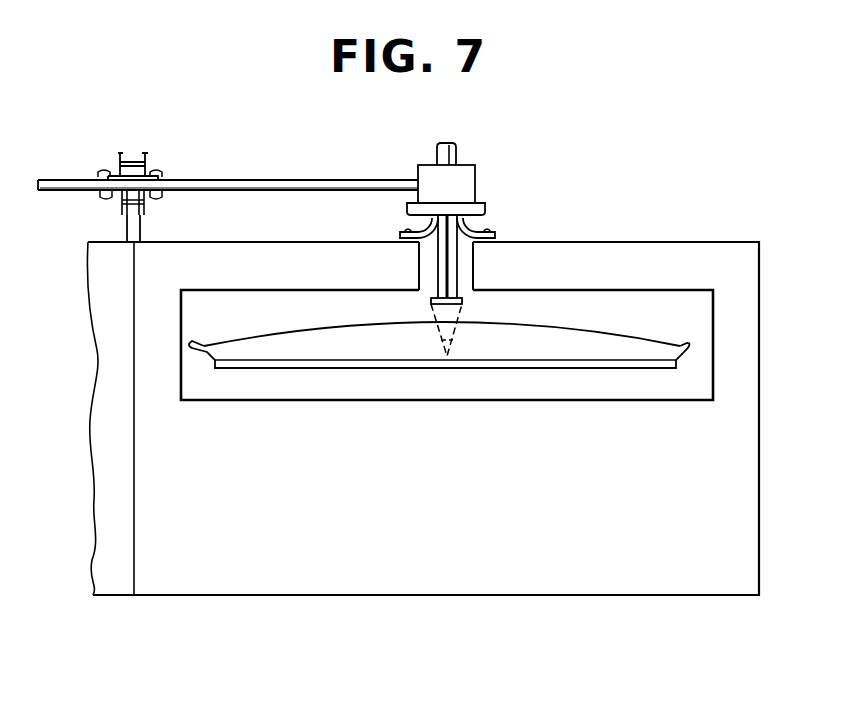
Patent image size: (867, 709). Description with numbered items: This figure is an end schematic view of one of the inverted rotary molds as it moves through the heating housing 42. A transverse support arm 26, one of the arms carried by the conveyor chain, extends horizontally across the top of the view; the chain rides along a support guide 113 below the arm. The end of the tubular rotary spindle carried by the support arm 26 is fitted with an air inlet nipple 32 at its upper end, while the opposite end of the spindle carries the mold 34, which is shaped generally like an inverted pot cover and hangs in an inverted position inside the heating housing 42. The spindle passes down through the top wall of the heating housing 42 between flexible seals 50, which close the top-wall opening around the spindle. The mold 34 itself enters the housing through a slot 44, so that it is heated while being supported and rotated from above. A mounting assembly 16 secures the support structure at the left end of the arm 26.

The clamp bracket 16 is at (118, 205).
The transverse support arm 26 is at (308, 178).
The air inlet nipple 32 is at (437, 151).
The mold 34 is at (621, 325).
The heating housing 42 is at (342, 575).
The slot 44 is at (181, 366).
The flexible seal 50 is at (412, 235).
The support guide 113 is at (131, 230).